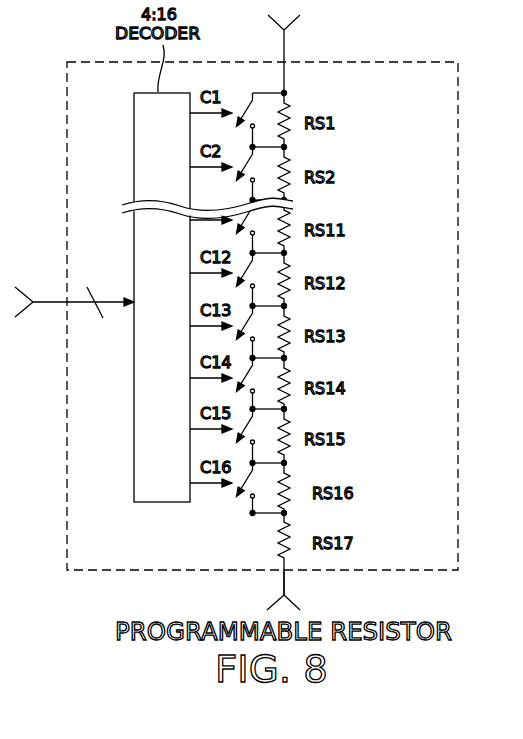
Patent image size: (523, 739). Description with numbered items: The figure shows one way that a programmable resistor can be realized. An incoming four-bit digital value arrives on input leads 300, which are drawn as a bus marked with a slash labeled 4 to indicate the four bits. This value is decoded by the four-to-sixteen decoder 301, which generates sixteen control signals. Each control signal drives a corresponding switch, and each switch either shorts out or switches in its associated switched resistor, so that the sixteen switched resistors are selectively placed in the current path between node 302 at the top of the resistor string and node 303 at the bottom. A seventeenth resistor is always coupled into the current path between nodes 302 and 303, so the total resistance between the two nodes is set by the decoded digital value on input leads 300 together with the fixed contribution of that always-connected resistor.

The input leads 300 is at (46, 301).
The 4-bit control bus 4 is at (95, 290).
The 4:16 decoder 301 is at (178, 279).
The node 302 is at (286, 49).
The node 303 is at (285, 590).